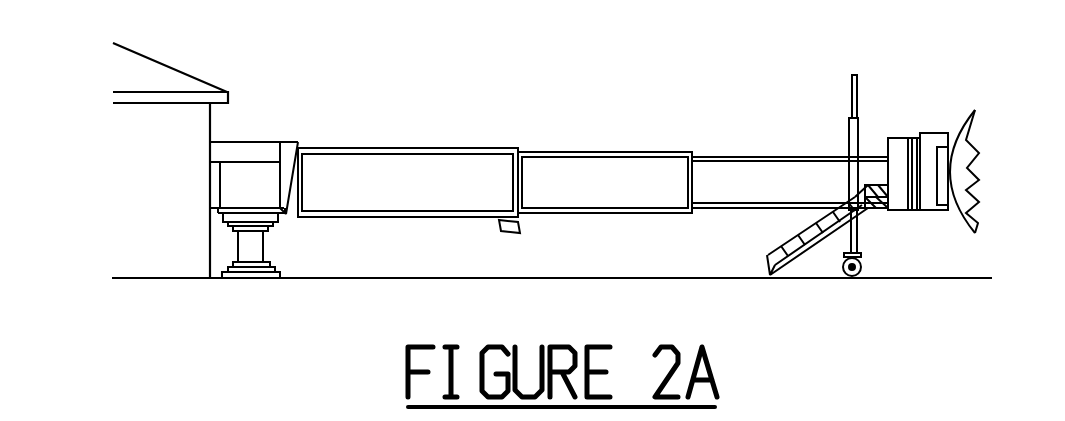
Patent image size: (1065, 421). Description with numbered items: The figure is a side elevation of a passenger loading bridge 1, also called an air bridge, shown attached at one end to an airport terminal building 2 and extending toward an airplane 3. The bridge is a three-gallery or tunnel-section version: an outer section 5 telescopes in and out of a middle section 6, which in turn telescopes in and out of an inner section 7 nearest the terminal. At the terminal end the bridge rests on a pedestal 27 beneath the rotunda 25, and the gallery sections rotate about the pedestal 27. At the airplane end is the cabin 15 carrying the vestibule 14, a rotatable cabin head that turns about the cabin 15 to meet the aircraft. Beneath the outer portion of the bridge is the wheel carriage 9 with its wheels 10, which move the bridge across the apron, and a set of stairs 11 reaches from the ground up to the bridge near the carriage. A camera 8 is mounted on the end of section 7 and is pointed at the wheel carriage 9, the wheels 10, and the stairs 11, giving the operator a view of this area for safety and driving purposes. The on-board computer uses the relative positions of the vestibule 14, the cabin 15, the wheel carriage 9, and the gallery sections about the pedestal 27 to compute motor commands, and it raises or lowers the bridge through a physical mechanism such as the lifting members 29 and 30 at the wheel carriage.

The passenger loading bridge 1 is at (535, 152).
The terminal building 2 is at (213, 127).
The airplane 3 is at (968, 156).
The section 5 is at (752, 175).
The section 6 is at (598, 177).
The section 7 is at (397, 160).
The camera 8 is at (517, 229).
The wheel carriage 9 is at (858, 258).
The wheels 10 is at (857, 274).
The stairs 11 is at (794, 262).
The vestibule 14 is at (934, 134).
The cabin 15 is at (900, 150).
The rotunda 25 is at (262, 180).
The pedestal 27 is at (265, 258).
The physical mechanism 29 is at (852, 93).
The physical mechanism 30 is at (855, 236).